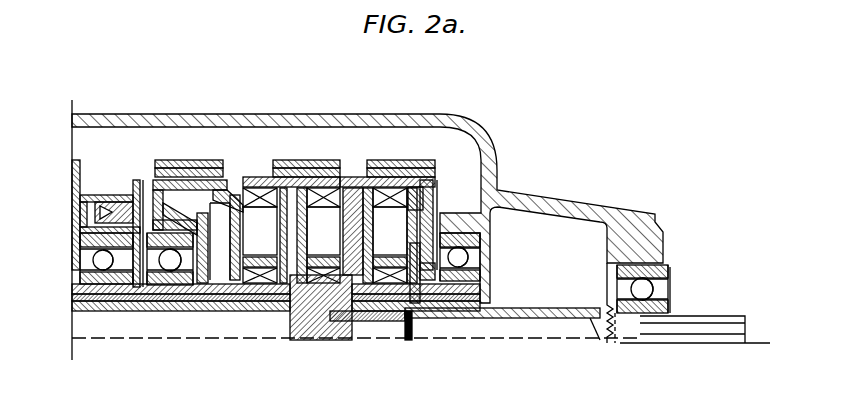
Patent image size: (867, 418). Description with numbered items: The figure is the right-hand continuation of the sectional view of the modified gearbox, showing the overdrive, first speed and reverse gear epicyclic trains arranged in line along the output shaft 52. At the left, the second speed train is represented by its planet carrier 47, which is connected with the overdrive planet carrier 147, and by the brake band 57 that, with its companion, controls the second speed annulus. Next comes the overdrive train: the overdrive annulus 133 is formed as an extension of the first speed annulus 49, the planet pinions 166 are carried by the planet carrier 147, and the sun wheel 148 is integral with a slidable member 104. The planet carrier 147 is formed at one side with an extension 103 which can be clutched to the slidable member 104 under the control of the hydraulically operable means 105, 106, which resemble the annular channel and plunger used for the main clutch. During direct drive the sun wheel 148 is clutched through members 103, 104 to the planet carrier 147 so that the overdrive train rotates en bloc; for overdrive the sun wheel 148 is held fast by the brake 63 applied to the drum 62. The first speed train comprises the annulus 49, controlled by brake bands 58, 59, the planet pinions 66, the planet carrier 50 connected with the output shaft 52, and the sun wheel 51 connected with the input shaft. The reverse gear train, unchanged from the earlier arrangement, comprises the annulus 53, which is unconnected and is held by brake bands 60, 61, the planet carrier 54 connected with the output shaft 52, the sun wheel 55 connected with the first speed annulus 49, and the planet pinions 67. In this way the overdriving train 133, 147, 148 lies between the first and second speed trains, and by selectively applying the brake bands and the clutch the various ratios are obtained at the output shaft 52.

The planet carrier 47 is at (77, 256).
The annulus 49 is at (342, 177).
The planet carrier 50 is at (342, 302).
The sun wheel 51 is at (323, 297).
The output shaft 52 is at (533, 318).
The annulus 53 is at (433, 178).
The planet carrier 54 is at (410, 200).
The sun wheel 55 is at (387, 311).
The brake band 57 is at (76, 156).
The brake band 58 is at (292, 160).
The brake band 59 is at (320, 160).
The brake band 60 is at (383, 160).
The brake band 61 is at (412, 160).
The drum 62 is at (177, 160).
The brake 63 is at (207, 160).
The planet pinions 66 is at (321, 257).
The planet pinions 67 is at (390, 257).
The clutch member 103 is at (260, 235).
The slidable clutch member 104 is at (157, 193).
The hydraulically operable means 105 is at (80, 193).
The hydraulically operable means 106 is at (122, 195).
The overdrive annulus 133 is at (265, 177).
The planet carrier 147 is at (235, 192).
The sun wheel 148 is at (233, 312).
The planet pinions 166 is at (262, 285).